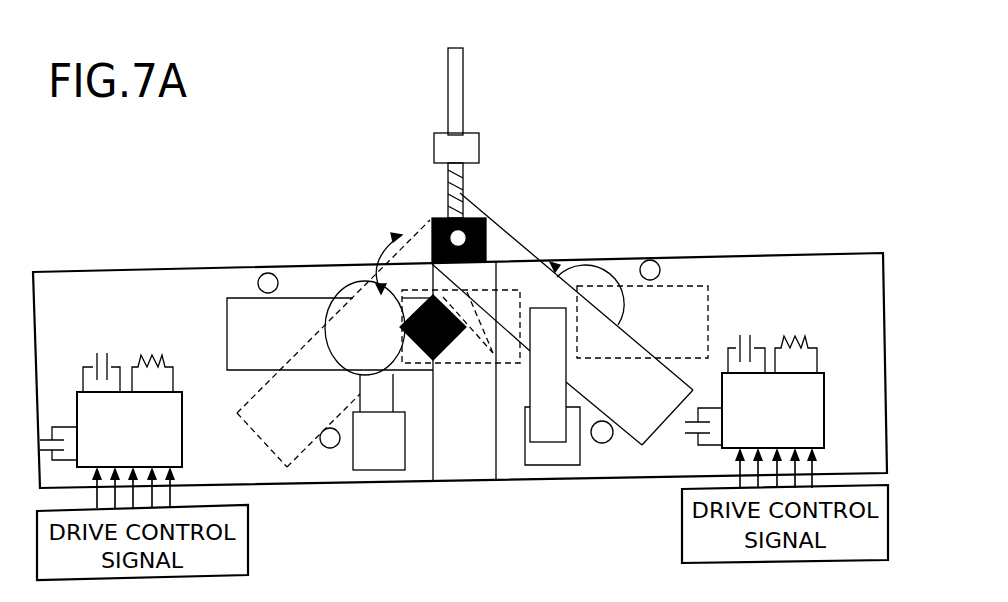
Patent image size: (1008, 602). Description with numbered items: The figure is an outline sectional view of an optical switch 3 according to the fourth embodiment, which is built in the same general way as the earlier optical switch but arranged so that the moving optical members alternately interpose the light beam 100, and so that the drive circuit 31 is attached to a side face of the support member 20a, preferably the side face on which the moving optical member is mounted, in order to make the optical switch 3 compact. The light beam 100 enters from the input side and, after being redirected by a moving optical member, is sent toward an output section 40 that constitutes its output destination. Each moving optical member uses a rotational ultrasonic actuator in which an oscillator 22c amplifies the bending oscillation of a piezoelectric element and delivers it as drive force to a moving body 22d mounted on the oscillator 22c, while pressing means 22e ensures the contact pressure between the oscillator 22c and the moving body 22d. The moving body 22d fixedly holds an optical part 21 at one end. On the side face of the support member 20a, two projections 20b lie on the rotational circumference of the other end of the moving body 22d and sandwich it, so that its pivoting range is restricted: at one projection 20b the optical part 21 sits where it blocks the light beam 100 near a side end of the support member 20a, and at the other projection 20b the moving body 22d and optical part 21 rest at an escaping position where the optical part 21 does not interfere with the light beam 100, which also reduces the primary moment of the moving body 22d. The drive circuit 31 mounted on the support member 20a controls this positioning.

The optical switch 3 is at (466, 33).
The output section 40 is at (482, 114).
The light beam 100 is at (466, 184).
The optical part 21 is at (487, 218).
The oscillator 22c is at (365, 283).
The moving body 22d is at (502, 248).
The pressing means 22e is at (542, 423).
The support member 20a is at (128, 290).
The projection 20b is at (263, 273).
The drive circuit 31 is at (182, 428).